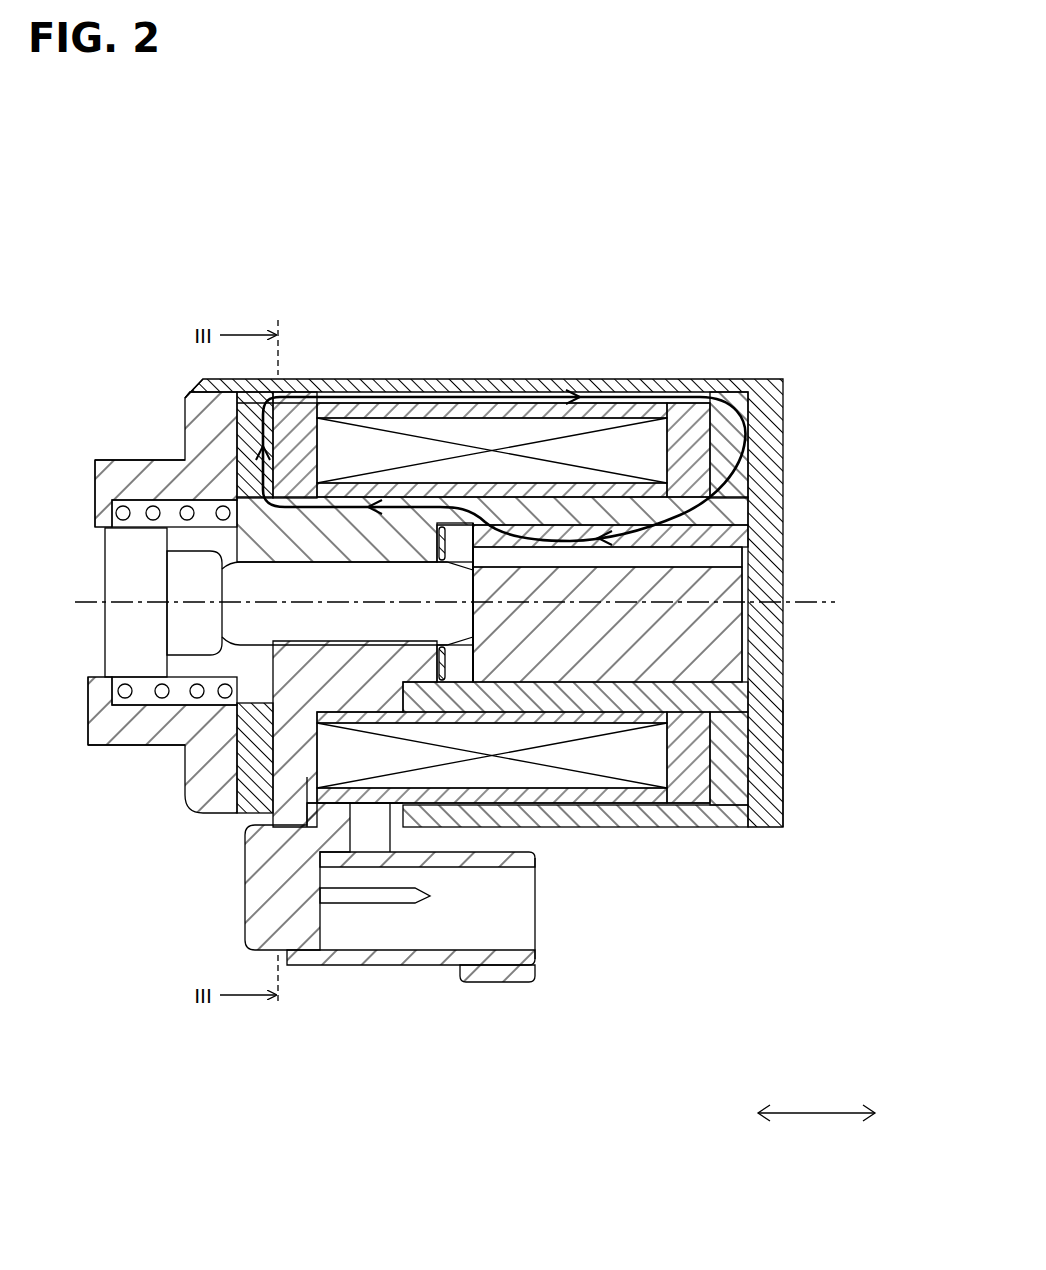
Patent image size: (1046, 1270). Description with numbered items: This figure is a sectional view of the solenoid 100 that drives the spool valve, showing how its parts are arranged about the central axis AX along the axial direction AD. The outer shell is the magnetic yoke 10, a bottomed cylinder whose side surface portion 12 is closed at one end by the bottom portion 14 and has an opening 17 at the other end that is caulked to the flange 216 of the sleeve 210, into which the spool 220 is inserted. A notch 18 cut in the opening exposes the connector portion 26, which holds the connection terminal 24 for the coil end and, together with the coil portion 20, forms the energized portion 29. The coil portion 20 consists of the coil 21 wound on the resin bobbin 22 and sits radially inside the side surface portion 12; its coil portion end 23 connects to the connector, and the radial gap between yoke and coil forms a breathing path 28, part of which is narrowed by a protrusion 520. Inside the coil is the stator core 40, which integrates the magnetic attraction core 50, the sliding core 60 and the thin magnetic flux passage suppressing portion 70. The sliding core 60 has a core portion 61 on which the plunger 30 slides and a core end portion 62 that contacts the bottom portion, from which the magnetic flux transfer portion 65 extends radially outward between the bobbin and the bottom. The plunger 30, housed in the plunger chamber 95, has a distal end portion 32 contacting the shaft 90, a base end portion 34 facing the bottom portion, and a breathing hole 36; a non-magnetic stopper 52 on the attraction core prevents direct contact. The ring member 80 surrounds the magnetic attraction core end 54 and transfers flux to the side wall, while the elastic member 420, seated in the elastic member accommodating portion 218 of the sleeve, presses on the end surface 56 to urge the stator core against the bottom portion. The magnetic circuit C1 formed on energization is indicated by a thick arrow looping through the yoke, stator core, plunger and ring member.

The solenoid 100 is at (782, 247).
The yoke 10 is at (787, 392).
The side surface portion 12 is at (335, 392).
The bottom portion 14 is at (772, 786).
The opening 17 is at (185, 418).
The notch 18 is at (390, 803).
The coil portion 20 is at (522, 822).
The coil 21 is at (603, 772).
The bobbin 22 is at (673, 773).
The coil portion end 23 is at (250, 912).
The connection terminal 24 is at (393, 897).
The connector portion 26 is at (550, 983).
The breathing path 28 is at (560, 807).
The energized portion 29 is at (623, 1040).
The plunger 30 is at (644, 617).
The distal end portion 32 is at (453, 493).
The base end portion 34 is at (748, 618).
The breathing hole 36 is at (747, 573).
The stator core 40 is at (491, 368).
The magnetic attraction core 50 is at (402, 527).
The stopper 52 is at (440, 665).
The protrusion 520 is at (293, 392).
The magnetic attraction core end 54 is at (245, 541).
The end surface 56 is at (217, 643).
The sliding core 60 is at (695, 475).
The core portion 61 is at (593, 517).
The core end portion 62 is at (748, 548).
The magnetic flux transfer portion 65 is at (745, 437).
The magnetic flux passage suppressing portion 70 is at (517, 517).
The ring member 80 is at (233, 379).
The shaft 90 is at (222, 787).
The plunger chamber 95 is at (450, 665).
The sleeve 210 is at (98, 460).
The flange 216 is at (240, 815).
The elastic member accommodating portion 218 is at (160, 477).
The spool 220 is at (103, 677).
The elastic member 420 is at (163, 707).
The central axis AX is at (479, 605).
The magnetic circuit C1 is at (710, 393).
The axial direction AD is at (816, 1103).